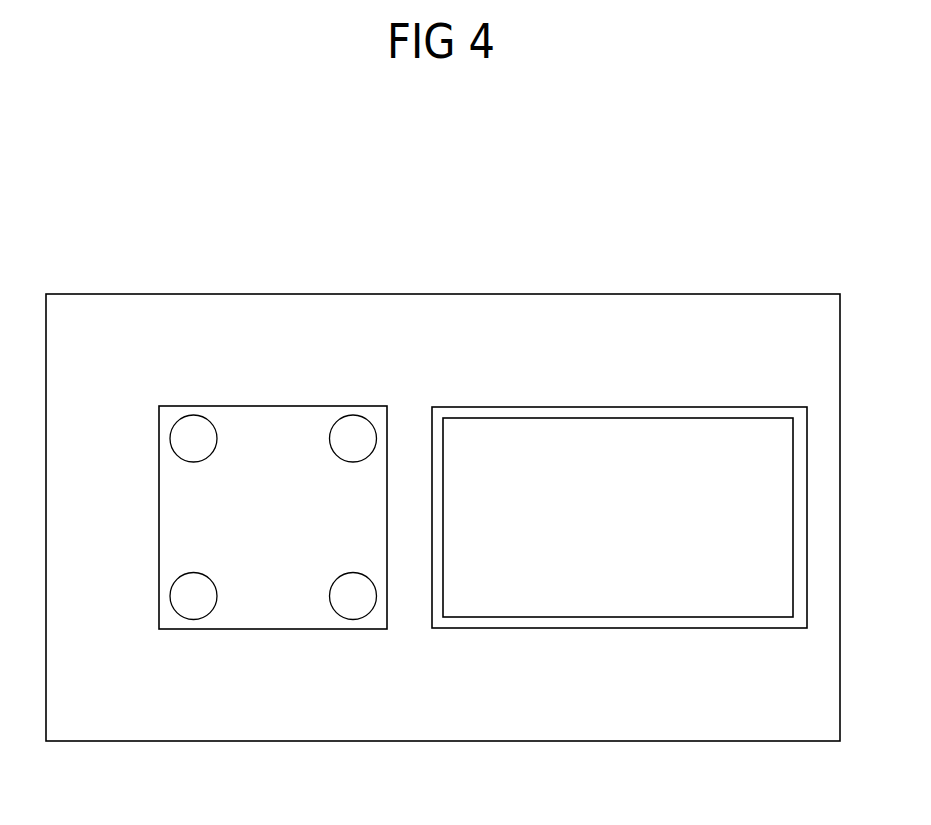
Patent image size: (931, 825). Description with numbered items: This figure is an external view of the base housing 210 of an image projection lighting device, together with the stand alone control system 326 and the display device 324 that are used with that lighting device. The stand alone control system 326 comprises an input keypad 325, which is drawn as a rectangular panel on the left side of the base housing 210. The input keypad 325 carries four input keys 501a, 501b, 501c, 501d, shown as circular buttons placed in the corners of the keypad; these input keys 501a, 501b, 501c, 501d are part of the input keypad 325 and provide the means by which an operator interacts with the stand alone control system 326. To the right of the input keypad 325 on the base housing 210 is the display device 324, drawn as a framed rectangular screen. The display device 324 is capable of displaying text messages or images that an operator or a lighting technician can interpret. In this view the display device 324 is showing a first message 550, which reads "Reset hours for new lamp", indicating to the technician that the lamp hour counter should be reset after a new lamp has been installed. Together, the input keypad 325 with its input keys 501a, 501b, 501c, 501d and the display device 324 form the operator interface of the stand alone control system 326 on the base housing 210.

The base housing 210 is at (136, 288).
The stand alone control system 326 is at (408, 328).
The input keypad 325 is at (250, 396).
The input key 501a is at (193, 438).
The input key 501b is at (353, 438).
The input key 501c is at (193, 596).
The input key 501d is at (353, 596).
The display device 324 is at (657, 396).
The message 550 is at (747, 430).